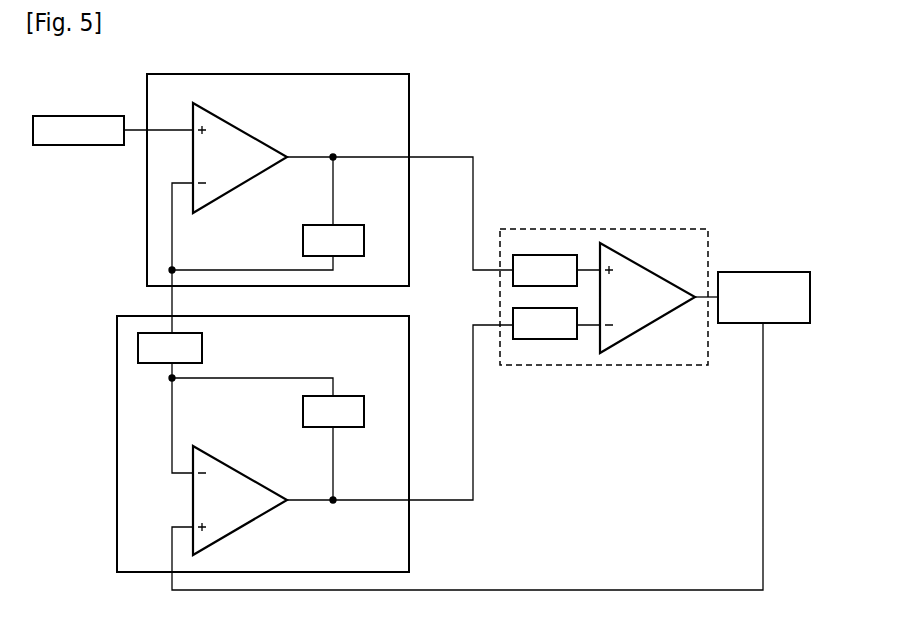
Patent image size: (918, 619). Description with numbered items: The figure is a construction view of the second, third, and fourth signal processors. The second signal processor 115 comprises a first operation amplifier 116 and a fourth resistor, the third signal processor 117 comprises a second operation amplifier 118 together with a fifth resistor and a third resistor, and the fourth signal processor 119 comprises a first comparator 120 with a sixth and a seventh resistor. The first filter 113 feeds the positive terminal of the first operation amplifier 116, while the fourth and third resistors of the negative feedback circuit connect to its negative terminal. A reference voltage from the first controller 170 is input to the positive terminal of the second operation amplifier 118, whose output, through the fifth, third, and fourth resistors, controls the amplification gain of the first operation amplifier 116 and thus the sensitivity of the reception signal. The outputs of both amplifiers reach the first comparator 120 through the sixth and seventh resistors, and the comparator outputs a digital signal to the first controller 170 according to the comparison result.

The first filter 113 is at (102, 115).
The second signal processor 115 is at (330, 190).
The first operation amplifier 116 is at (255, 126).
The third signal processor 117 is at (414, 453).
The second operation amplifier 118 is at (255, 468).
The fourth signal processor 119 is at (604, 282).
The first comparator 120 is at (661, 266).
The first controller 170 is at (753, 270).